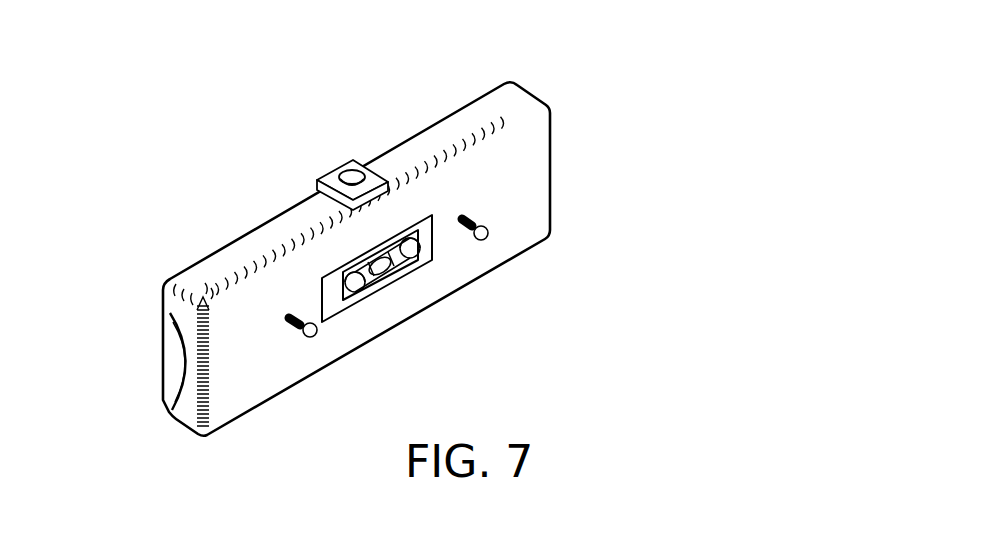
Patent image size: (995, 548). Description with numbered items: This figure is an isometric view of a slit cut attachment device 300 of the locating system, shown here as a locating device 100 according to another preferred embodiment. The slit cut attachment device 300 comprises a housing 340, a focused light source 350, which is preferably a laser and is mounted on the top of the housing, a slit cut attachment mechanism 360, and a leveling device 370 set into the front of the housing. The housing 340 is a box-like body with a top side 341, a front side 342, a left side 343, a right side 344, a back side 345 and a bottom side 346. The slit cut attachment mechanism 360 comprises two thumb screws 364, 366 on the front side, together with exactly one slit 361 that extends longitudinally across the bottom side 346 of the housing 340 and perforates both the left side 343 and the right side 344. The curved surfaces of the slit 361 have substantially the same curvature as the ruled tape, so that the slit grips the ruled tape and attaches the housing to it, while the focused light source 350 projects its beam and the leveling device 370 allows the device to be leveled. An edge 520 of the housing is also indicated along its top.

The measuring device 100 is at (136, 192).
The slit cut attachment device 300 is at (140, 168).
The housing 340 is at (545, 197).
The top side 341 is at (212, 258).
The front side 342 is at (272, 378).
The left side 343 is at (165, 360).
The right side 344 is at (550, 152).
The back side 345 is at (163, 302).
The bottom side 346 is at (195, 432).
The focused light source 350 is at (347, 167).
The slit cut attachment mechanism 360 is at (156, 443).
The slit 361 is at (155, 427).
The thumb screw 364 is at (317, 333).
The thumb screw 366 is at (487, 236).
The leveling device 370 is at (397, 278).
The top edge 520 is at (489, 77).